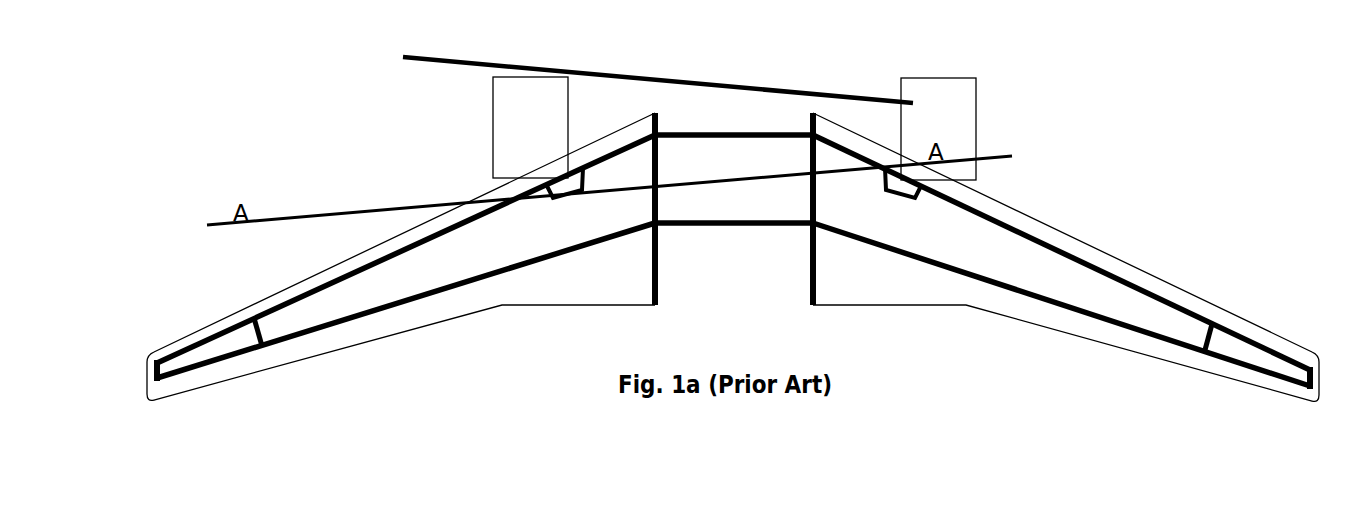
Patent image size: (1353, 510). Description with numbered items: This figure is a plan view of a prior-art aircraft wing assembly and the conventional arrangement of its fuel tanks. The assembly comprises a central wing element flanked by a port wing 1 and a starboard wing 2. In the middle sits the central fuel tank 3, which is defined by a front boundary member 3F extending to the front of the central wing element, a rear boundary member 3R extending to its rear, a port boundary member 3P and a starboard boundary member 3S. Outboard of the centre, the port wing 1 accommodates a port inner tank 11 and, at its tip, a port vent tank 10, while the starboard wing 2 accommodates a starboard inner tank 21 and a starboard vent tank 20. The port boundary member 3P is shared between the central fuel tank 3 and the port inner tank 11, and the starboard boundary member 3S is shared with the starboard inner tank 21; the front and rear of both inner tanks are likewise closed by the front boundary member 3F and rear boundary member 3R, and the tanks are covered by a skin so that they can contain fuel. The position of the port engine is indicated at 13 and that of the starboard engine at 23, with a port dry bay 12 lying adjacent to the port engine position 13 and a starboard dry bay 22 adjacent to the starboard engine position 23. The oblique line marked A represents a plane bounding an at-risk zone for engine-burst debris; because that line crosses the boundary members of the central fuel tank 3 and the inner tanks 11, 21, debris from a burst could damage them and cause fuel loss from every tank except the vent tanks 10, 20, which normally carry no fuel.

The port wing 1 is at (336, 351).
The starboard wing 2 is at (1027, 325).
The central fuel tank 3 is at (734, 234).
The front boundary member 3F is at (708, 130).
The port boundary member 3P is at (658, 203).
The rear boundary member 3R is at (758, 228).
The starboard boundary member 3S is at (810, 207).
The port vent tank 10 is at (228, 354).
The port inner tank 11 is at (403, 303).
The port dry bay 12 is at (572, 193).
The port engine position 13 is at (493, 112).
The starboard vent tank 20 is at (1272, 374).
The starboard inner tank 21 is at (1157, 331).
The starboard dry bay 22 is at (912, 189).
The starboard engine position 23 is at (977, 130).